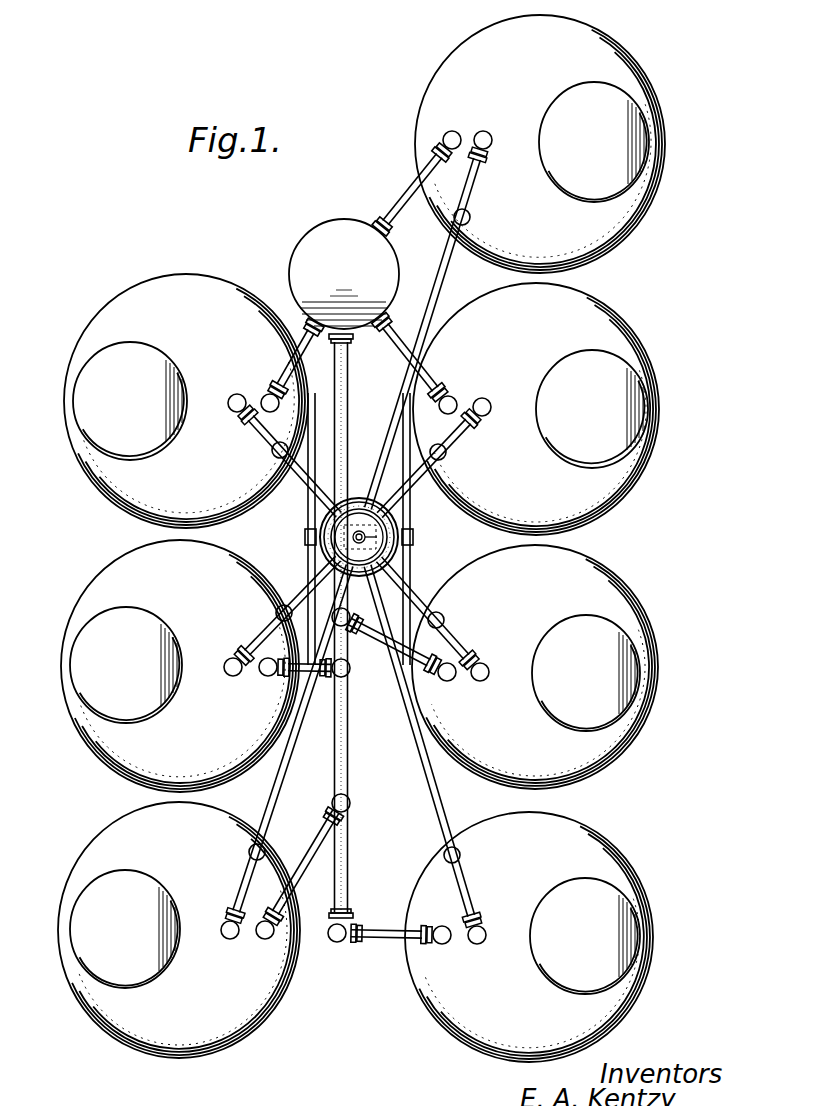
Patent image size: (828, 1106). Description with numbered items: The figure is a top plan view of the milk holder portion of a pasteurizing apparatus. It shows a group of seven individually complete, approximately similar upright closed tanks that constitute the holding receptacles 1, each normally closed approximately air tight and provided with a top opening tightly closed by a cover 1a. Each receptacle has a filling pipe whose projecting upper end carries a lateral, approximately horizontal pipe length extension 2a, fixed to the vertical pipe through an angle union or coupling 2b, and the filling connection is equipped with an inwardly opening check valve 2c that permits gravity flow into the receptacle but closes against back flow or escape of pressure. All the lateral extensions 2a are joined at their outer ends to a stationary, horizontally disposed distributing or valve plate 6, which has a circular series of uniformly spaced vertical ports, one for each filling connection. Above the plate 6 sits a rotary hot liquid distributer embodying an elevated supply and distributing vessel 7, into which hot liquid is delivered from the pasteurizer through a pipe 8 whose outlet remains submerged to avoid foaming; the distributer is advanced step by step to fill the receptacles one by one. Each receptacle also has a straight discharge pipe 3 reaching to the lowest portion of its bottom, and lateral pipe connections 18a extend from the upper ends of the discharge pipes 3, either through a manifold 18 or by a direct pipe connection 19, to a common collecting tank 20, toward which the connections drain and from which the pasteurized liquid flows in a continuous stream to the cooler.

The holding receptacle 1 is at (632, 214).
The cover 1a is at (359, 538).
The lateral pipe length extension 2a is at (436, 296).
The angle union or coupling 2b is at (480, 928).
The check valve 2c is at (482, 414).
The discharge pipe 3 is at (454, 132).
The distributing or valve plate 6 is at (358, 498).
The hot liquid supply and distributing vessel 7 is at (330, 522).
The pipe 8 is at (332, 537).
The manifold 18 is at (348, 714).
The lateral pipe connection 18a is at (312, 686).
The direct pipe connection 19 is at (418, 190).
The common collecting tank 20 is at (344, 274).